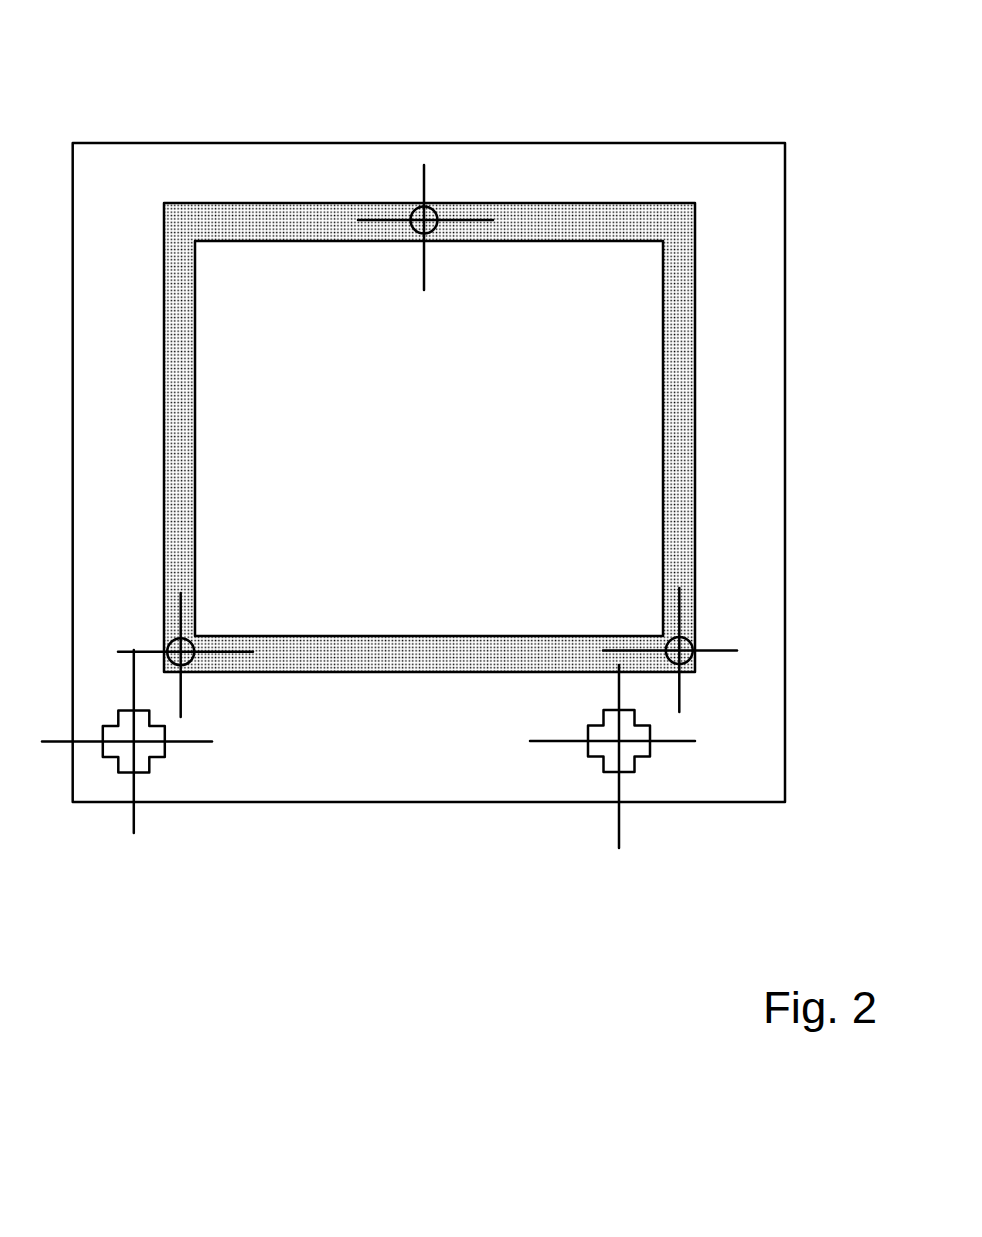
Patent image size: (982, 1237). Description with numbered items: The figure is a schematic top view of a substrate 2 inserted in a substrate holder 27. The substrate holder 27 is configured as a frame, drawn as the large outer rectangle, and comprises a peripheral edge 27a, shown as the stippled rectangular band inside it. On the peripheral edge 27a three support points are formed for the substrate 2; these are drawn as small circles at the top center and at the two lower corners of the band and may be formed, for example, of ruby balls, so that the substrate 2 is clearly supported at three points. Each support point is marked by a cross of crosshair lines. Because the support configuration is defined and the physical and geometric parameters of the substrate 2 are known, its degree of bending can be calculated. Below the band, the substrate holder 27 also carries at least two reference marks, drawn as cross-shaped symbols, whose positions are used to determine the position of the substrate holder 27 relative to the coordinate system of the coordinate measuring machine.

The substrate 2 is at (551, 367).
The substrate holder 27 is at (755, 228).
The peripheral edge 27a is at (680, 452).